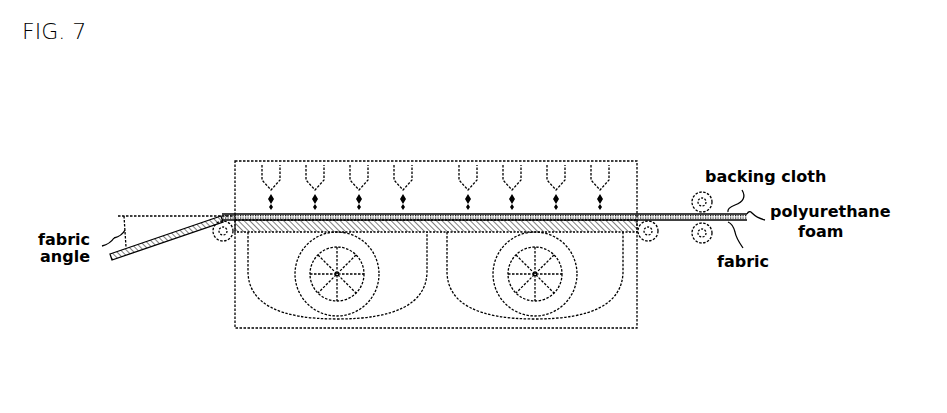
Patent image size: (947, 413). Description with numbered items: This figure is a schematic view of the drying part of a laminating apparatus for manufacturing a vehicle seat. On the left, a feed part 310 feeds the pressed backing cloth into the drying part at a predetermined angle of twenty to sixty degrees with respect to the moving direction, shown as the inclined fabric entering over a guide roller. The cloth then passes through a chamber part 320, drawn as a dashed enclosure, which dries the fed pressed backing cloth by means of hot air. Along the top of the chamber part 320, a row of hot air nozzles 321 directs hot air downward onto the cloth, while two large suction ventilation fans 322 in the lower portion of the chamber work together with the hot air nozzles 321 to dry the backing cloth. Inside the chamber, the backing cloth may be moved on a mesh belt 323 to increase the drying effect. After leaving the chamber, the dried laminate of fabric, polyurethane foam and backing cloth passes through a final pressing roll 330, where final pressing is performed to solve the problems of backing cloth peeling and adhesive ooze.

The feed part 310 is at (217, 202).
The chamber part 320 is at (353, 147).
The hot air nozzle 321 is at (445, 161).
The suction ventilation fan 322 is at (528, 290).
The mesh belt 323 is at (632, 243).
The final pressing roll 330 is at (700, 191).